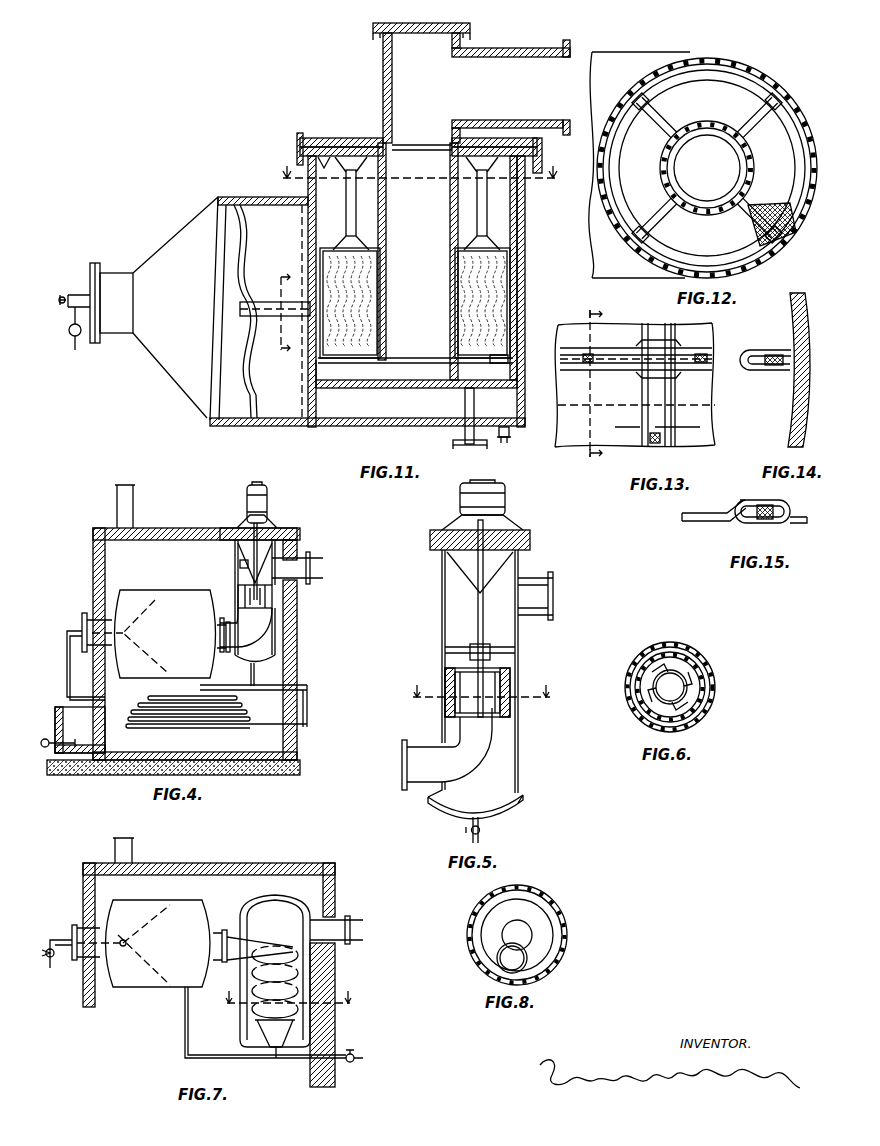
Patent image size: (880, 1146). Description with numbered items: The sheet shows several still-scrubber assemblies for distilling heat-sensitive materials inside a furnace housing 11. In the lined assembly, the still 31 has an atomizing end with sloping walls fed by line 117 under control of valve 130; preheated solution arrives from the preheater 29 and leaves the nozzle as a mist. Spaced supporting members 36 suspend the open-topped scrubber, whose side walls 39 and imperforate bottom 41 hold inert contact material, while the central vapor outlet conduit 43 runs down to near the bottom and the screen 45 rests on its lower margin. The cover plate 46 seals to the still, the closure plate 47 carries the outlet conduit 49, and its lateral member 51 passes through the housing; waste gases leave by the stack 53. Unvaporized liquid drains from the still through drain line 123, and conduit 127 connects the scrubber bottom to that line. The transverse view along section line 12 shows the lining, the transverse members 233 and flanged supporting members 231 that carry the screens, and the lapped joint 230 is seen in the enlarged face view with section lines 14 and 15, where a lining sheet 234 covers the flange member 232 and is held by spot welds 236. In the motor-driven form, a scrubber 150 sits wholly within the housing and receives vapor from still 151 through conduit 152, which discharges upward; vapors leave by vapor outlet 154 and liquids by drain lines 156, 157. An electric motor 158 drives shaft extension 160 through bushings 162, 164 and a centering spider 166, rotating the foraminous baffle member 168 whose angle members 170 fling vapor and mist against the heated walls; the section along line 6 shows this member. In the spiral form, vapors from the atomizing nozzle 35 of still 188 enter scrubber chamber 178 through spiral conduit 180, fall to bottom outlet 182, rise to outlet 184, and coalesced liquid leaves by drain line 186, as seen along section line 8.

In FIG. 4, the furnace housing 11 is at (93, 563).
In FIG. 7, the furnace housing 11 is at (335, 878).
In FIG. 11, the section line 12— 12 is at (419, 181).
In FIG. 11, the section line 14— 14 is at (279, 315).
In FIG. 13, the section line 14— 14 is at (601, 384).
In FIG. 13, the section line 15— 15 is at (658, 427).
In FIG. 5, the section line 6— 6 is at (481, 688).
In FIG. 7, the section line 8— 8 is at (288, 1000).
In FIG. 4, the preheater 29 is at (235, 730).
In FIG. 11, the still 31 is at (165, 236).
In FIG. 7, the atomizing nozzle 35 is at (125, 941).
In FIG. 11, the supporting members 36 is at (300, 161).
In FIG. 12, the supporting members 36 is at (657, 85).
In FIG. 11, the side walls 39 is at (523, 265).
In FIG. 11, the imperforate bottom 41 is at (372, 388).
In FIG. 11, the vapor outlet conduit 43 is at (380, 291).
In FIG. 12, the vapor outlet conduit 43 is at (712, 128).
In FIG. 11, the screen 45 is at (492, 362).
In FIG. 11, the cover plate 46 is at (324, 165).
In FIG. 11, the closure plate 47 is at (356, 140).
In FIG. 11, the outlet conduit 49 is at (383, 80).
In FIG. 11, the lateral member 51 is at (496, 48).
In FIG. 4, the stack 53 is at (117, 500).
In FIG. 7, the stack 53 is at (132, 847).
In FIG. 4, the line 117 is at (67, 680).
In FIG. 7, the line 117 is at (72, 942).
In FIG. 11, the drain line 123 is at (504, 441).
In FIG. 11, the conduit 127 is at (465, 403).
In FIG. 11, the valve 130 is at (79, 337).
In FIG. 4, the scrubber 150 is at (276, 615).
In FIG. 5, the scrubber 150 is at (442, 608).
In FIG. 4, the still 151 is at (155, 600).
In FIG. 4, the conduit 152 is at (265, 632).
In FIG. 5, the conduit 152 is at (415, 783).
In FIG. 6, the conduit 152 is at (658, 678).
In FIG. 4, the vapor outlet 154 is at (323, 570).
In FIG. 5, the vapor outlet 154 is at (540, 580).
In FIG. 4, the liquid drain line 156 is at (257, 668).
In FIG. 5, the liquid drain line 156 is at (480, 824).
In FIG. 4, the liquid drain line 157 is at (255, 688).
In FIG. 4, the electric motor 158 is at (247, 490).
In FIG. 5, the electric motor 158 is at (506, 498).
In FIG. 4, the shaft extension 160 is at (258, 575).
In FIG. 5, the shaft extension 160 is at (478, 628).
In FIG. 4, the bushing 162 is at (272, 527).
In FIG. 5, the bushing 162 is at (490, 537).
In FIG. 4, the bushing 164 is at (262, 562).
In FIG. 5, the bushing 164 is at (490, 570).
In FIG. 4, the centering spider 166 is at (239, 563).
In FIG. 5, the centering spider 166 is at (470, 650).
In FIG. 4, the baffle member 168 is at (273, 600).
In FIG. 5, the baffle member 168 is at (508, 683).
In FIG. 6, the baffle member 168 is at (706, 687).
In FIG. 5, the angle members 170 is at (462, 683).
In FIG. 6, the angle members 170 is at (683, 668).
In FIG. 7, the scrubber chamber 178 is at (277, 897).
In FIG. 8, the scrubber chamber 178 is at (565, 915).
In FIG. 7, the spiral conduit 180 is at (305, 958).
In FIG. 8, the spiral conduit 180 is at (550, 950).
In FIG. 7, the bottom outlet 182 is at (289, 1022).
In FIG. 7, the outlet 184 is at (363, 932).
In FIG. 7, the drain line 186 is at (353, 1062).
In FIG. 7, the still 188 is at (176, 990).
In FIG. 11, the lapped joint 230 is at (300, 219).
In FIG. 13, the lapped joint 230 is at (655, 338).
In FIG. 15, the lapped joint 230 is at (784, 508).
In FIG. 11, the flanged supporting members 231 is at (316, 372).
In FIG. 14, the flange member 232 is at (786, 352).
In FIG. 11, the transverse members 233 is at (340, 364).
In FIG. 12, the transverse members 233 is at (668, 117).
In FIG. 14, the lining sheet 234 is at (790, 415).
In FIG. 13, the spot welds 236 is at (585, 352).
In FIG. 14, the spot welds 236 is at (776, 368).
In FIG. 15, the spot welds 236 is at (762, 505).